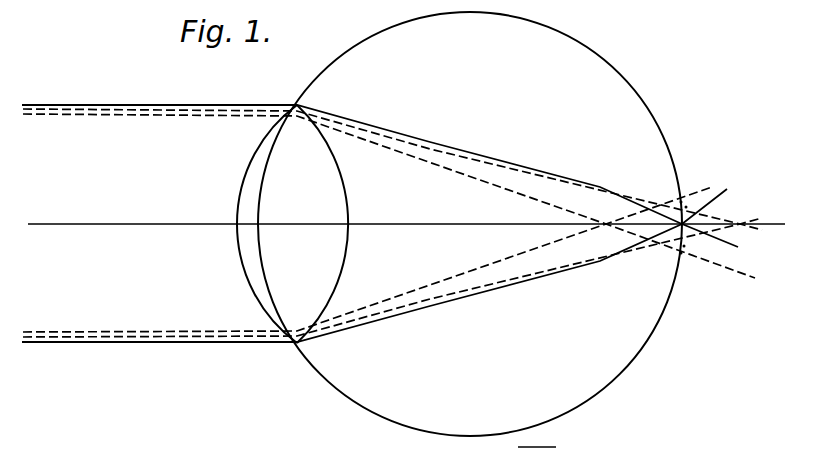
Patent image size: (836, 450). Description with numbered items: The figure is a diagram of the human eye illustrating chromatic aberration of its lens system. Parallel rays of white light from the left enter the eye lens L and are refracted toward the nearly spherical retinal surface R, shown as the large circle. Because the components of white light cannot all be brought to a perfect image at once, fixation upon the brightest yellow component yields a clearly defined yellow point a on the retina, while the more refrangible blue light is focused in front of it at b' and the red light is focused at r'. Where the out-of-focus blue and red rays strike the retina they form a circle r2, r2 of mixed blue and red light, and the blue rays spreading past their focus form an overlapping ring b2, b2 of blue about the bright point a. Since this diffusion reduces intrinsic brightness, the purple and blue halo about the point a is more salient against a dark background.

The eye lens L is at (257, 301).
The retinal surface R is at (634, 364).
The yellow point image a is at (682, 224).
The blue light focus b' is at (389, 223).
The blue ring b2 is at (681, 202).
The red light focus r' is at (397, 223).
The circle of blue and red light r2 is at (687, 207).